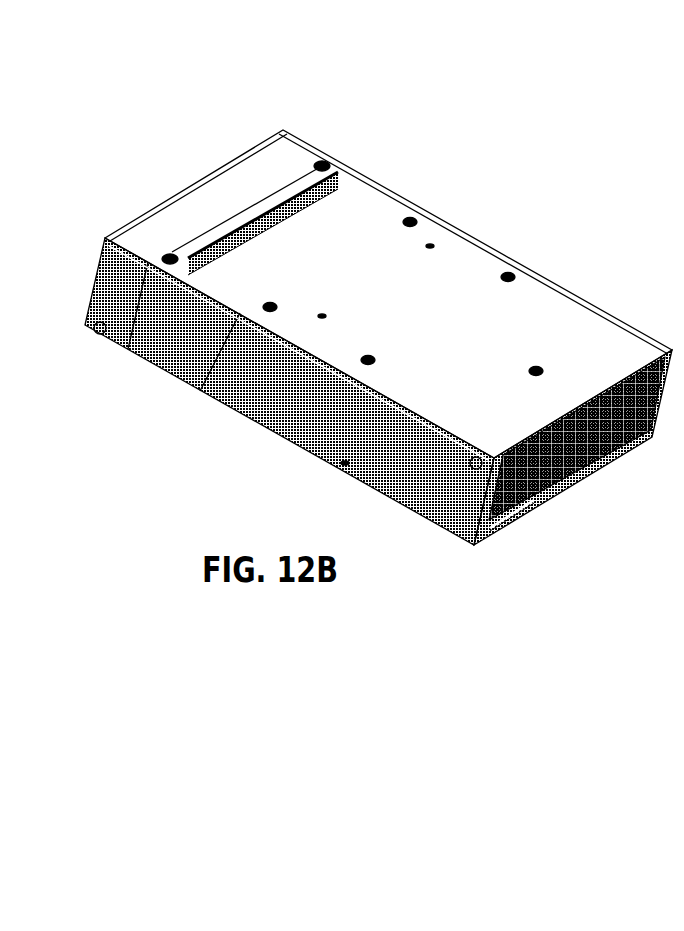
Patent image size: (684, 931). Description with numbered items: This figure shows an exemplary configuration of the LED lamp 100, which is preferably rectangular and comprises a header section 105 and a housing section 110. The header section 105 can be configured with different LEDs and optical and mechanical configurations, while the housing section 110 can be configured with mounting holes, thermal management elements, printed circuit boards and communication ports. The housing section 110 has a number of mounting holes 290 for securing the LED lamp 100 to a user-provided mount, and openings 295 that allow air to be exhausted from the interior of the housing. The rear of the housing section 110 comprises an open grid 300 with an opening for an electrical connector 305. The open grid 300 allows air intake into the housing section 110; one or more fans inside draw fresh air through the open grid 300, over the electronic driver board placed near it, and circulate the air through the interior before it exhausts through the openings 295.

The LED lamp 100 is at (382, 338).
The header section 105 is at (313, 137).
The housing section 110 is at (553, 274).
The mounting holes 290 is at (417, 218).
The openings 295 is at (352, 175).
The open grid 300 is at (625, 458).
The electrical connector 305 is at (517, 523).